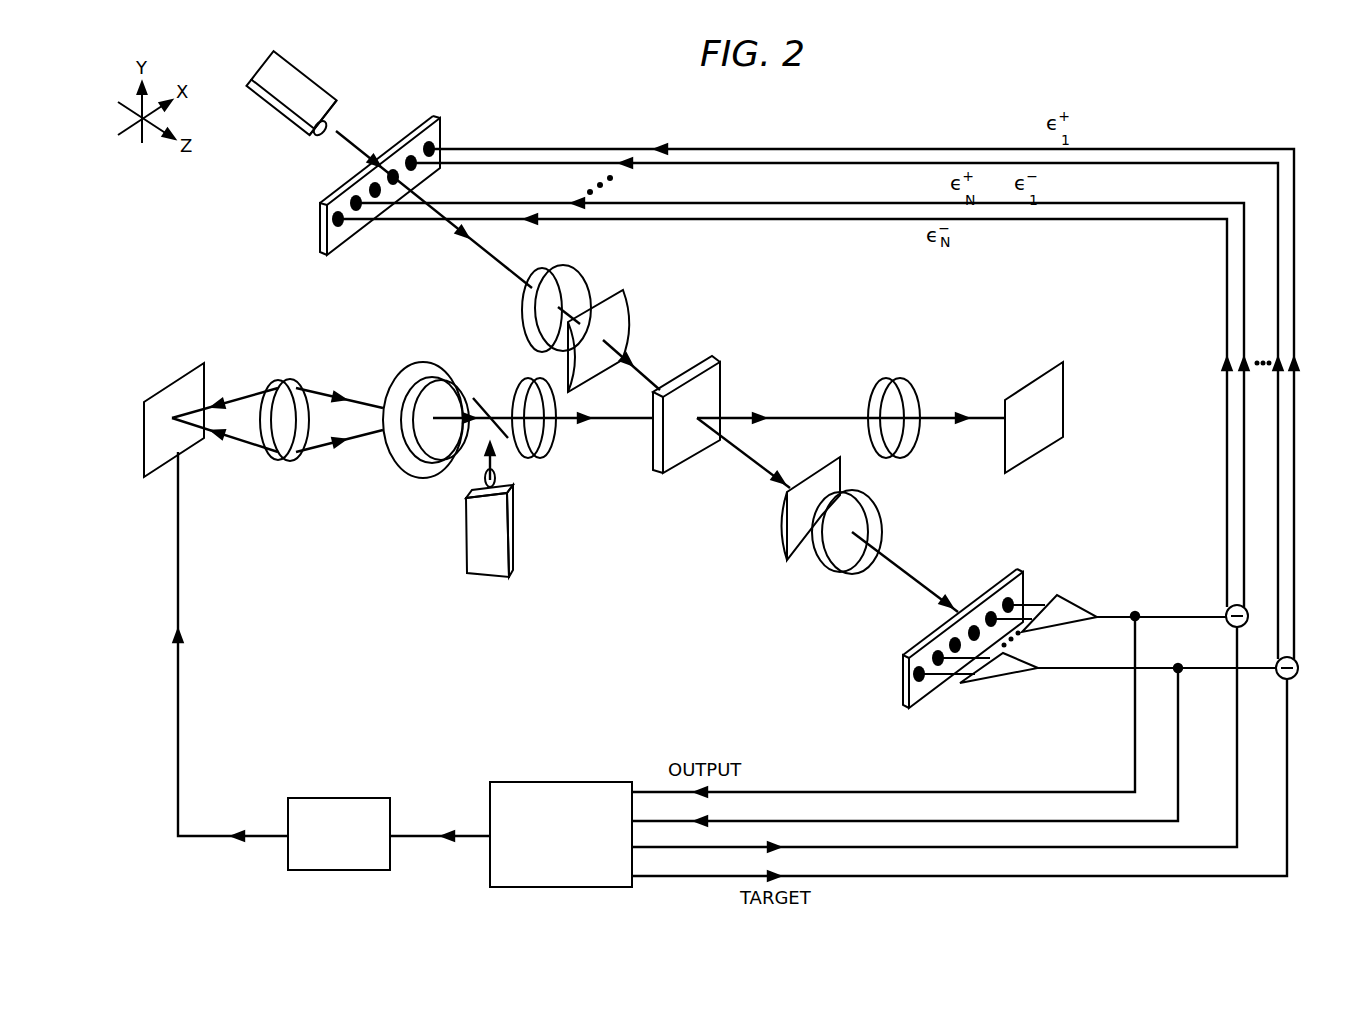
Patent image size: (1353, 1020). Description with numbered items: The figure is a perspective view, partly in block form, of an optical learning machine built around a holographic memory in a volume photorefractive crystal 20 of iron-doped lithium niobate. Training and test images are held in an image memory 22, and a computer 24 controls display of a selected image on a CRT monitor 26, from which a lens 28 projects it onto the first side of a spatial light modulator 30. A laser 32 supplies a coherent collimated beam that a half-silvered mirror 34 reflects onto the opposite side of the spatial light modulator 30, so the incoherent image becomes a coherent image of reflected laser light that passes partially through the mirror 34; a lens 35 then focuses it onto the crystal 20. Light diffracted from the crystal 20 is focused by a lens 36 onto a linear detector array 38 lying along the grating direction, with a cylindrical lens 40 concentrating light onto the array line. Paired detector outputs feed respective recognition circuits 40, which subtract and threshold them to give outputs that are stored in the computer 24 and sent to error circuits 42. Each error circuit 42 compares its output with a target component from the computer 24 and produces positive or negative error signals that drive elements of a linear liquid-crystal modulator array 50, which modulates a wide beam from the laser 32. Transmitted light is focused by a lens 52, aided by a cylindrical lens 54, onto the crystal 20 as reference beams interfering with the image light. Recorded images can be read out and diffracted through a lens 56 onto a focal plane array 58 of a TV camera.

The photorefractive crystal 20 is at (678, 474).
The image memory 22 is at (351, 797).
The computer 24 is at (545, 782).
The CRT monitor 26 is at (164, 392).
The lens 28 is at (280, 458).
The spatial light modulator 30 is at (404, 464).
The laser 32 is at (312, 73).
The half-silvered mirror 34 is at (489, 392).
The lens 35 is at (542, 460).
The lens 36 is at (818, 574).
The linear detector array 38 is at (896, 697).
The recognition circuit 40 is at (778, 550).
The error circuit 42 is at (1227, 606).
The liquid-crystal modulator array 50 is at (445, 134).
The lens 52 is at (574, 284).
The cylindrical lens 54 is at (622, 316).
The lens 56 is at (922, 452).
The focal plane array 58 is at (1036, 460).